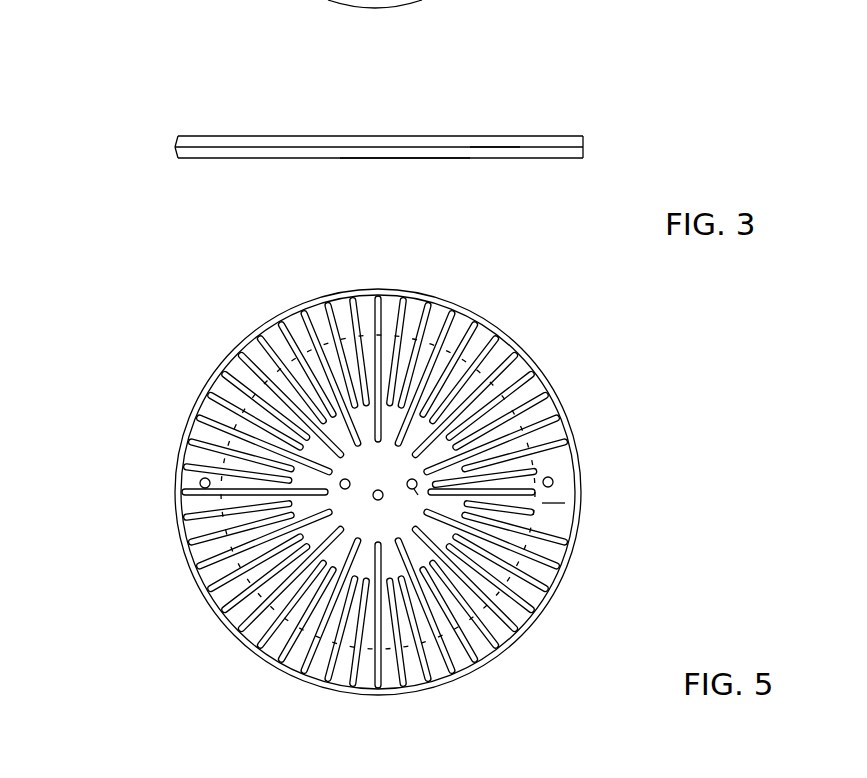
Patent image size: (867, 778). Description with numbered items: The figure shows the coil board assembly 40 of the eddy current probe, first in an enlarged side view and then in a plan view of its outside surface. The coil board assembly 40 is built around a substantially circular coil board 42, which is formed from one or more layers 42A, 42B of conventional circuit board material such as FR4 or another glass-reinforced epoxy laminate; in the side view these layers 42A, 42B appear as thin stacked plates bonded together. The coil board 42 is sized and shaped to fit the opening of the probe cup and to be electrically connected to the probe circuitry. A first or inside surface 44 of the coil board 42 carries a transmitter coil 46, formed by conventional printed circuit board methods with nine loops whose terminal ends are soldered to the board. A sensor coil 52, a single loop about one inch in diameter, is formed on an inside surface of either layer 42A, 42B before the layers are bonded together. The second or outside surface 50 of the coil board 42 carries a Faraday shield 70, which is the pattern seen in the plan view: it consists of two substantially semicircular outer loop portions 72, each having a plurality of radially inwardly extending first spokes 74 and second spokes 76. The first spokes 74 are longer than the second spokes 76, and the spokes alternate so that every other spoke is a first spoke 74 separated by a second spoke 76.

In FIG. 3, the coil board assembly 40 is at (324, 125).
In FIG. 5, the coil board assembly 40 is at (353, 498).
In FIG. 3, the coil board 42 is at (324, 121).
In FIG. 3, the first layer of coil board 42A is at (175, 141).
In FIG. 3, the second layer of coil board 42B is at (175, 152).
In FIG. 3, the inside surface 44 is at (527, 136).
In FIG. 3, the transmitter coil 46 is at (352, 134).
In FIG. 3, the outside surface 50 is at (378, 160).
In FIG. 5, the outside surface 50 is at (280, 342).
In FIG. 3, the sensor coil 52 is at (472, 148).
In FIG. 5, the sensor coil 52 is at (505, 385).
In FIG. 3, the Faraday shield 70 is at (446, 162).
In FIG. 5, the Faraday shield 70 is at (353, 498).
In FIG. 5, the outer loop portion 72 is at (190, 580).
In FIG. 5, the first spoke 74 is at (217, 412).
In FIG. 5, the second spoke 76 is at (185, 428).